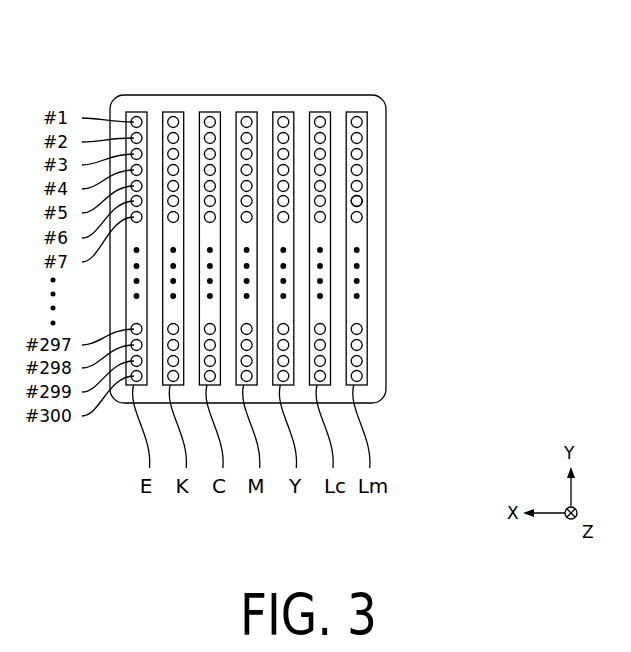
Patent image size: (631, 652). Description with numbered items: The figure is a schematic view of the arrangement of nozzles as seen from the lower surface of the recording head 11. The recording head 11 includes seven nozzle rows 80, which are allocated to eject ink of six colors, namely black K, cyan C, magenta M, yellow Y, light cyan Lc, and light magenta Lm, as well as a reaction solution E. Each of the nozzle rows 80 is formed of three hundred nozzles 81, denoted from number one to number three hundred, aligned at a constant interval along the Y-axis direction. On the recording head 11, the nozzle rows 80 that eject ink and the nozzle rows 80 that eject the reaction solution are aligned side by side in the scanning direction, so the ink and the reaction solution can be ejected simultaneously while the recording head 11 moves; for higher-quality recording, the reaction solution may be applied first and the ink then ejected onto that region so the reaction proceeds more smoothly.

The recording head 11 is at (334, 63).
The nozzle rows 80 is at (367, 161).
The nozzles 81 is at (357, 199).